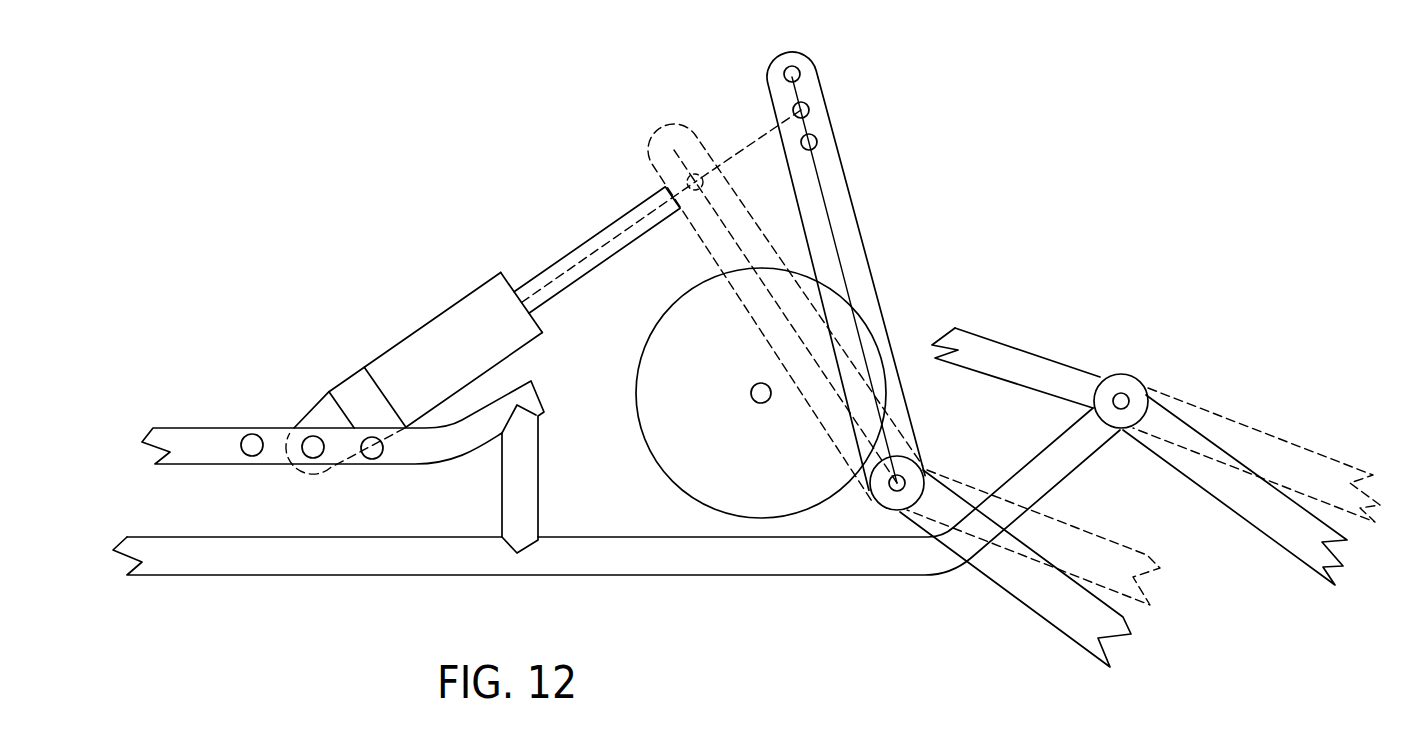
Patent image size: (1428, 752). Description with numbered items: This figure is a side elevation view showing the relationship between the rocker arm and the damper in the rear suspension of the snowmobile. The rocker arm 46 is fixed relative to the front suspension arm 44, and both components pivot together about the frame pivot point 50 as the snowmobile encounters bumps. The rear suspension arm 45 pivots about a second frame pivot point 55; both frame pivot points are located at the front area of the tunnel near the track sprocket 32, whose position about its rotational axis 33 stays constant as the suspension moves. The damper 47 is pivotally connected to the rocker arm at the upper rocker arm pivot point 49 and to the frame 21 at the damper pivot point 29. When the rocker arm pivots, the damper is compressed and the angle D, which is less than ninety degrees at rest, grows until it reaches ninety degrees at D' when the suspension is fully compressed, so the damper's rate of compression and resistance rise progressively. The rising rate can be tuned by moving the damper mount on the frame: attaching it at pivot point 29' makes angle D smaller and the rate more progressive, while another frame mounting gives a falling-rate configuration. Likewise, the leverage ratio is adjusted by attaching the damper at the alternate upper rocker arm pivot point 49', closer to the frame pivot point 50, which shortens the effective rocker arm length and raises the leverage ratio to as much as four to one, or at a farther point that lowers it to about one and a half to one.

The frame 21 is at (342, 552).
The damper pivot point 29 is at (297, 393).
The pivot point 29' is at (413, 477).
The track sprocket 32 is at (700, 478).
The track sprocket rotational axis 33 is at (751, 394).
The front suspension arm 44 is at (1067, 608).
The rear suspension arm 45 is at (1297, 531).
The rocker arm 46 is at (862, 280).
The damper 47 is at (443, 348).
The upper rocker arm pivot point 49 is at (842, 102).
The upper rocker arm pivot point 49' is at (855, 153).
The frame pivot point 50 is at (913, 450).
The frame pivot point 55 is at (1121, 393).
The angle D is at (778, 182).
The angle D' is at (682, 252).